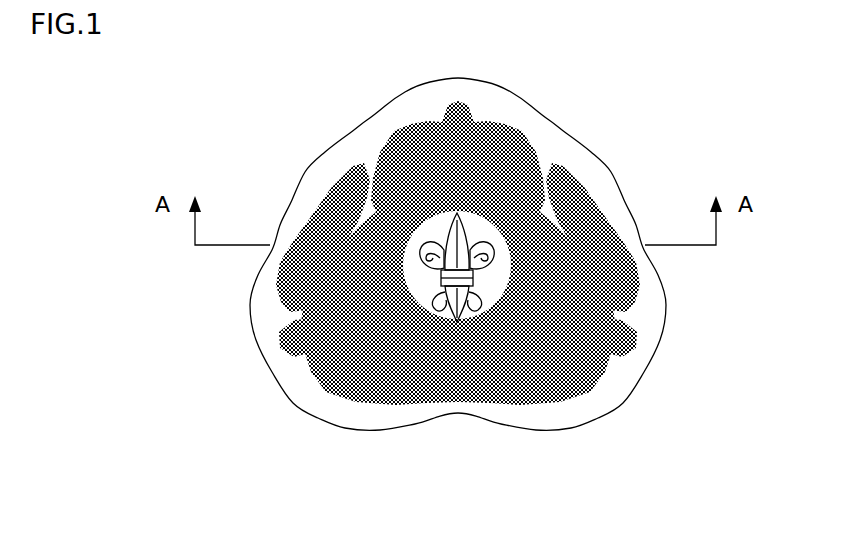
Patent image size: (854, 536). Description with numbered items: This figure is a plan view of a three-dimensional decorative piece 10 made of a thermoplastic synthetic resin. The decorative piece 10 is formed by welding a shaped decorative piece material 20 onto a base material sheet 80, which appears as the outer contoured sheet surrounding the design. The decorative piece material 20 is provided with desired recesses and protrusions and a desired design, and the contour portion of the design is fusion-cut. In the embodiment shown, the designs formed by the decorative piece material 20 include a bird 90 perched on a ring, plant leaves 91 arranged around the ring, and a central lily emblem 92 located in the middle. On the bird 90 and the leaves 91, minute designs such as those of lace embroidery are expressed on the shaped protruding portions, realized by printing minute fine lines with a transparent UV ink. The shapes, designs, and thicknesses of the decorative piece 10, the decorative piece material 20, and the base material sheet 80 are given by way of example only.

The decorative piece 10 is at (658, 106).
The decorative piece material 20 is at (633, 290).
The base material sheet 80 is at (643, 340).
The bird 90 is at (482, 122).
The plant leaves 91 is at (290, 318).
The central lily emblem 92 is at (340, 173).